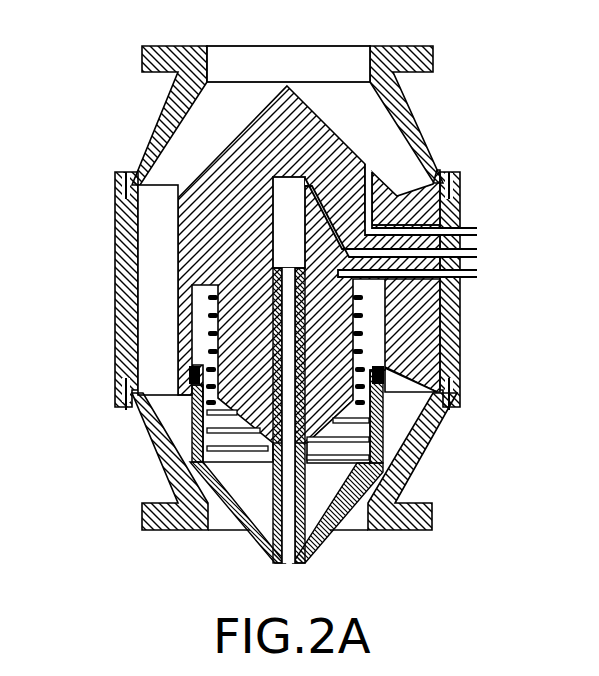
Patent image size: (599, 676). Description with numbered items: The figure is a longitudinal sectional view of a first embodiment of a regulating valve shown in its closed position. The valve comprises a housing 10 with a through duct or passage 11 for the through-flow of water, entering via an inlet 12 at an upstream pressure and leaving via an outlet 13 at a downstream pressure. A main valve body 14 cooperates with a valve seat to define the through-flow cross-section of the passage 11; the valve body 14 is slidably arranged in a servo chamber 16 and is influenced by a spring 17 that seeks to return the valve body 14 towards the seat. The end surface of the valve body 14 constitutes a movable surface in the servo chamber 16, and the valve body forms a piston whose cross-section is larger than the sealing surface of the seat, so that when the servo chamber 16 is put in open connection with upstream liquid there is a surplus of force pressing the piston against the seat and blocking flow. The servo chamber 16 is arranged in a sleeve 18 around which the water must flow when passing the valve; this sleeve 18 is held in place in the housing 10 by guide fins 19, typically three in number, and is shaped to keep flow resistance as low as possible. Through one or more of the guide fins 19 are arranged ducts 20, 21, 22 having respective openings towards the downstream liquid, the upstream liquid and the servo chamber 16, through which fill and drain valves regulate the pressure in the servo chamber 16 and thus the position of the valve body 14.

The housing 10 is at (122, 308).
The through duct or passage 11 is at (150, 266).
The inlet 12 is at (294, 490).
The outlet 13 is at (287, 94).
The main valve body 14 is at (269, 425).
The servo chamber 16 is at (161, 373).
The spring 17 is at (175, 444).
The sleeve 18 is at (188, 212).
The guide fins 19 is at (423, 340).
The duct 20 is at (459, 199).
The duct 21 is at (477, 253).
The duct 22 is at (448, 288).